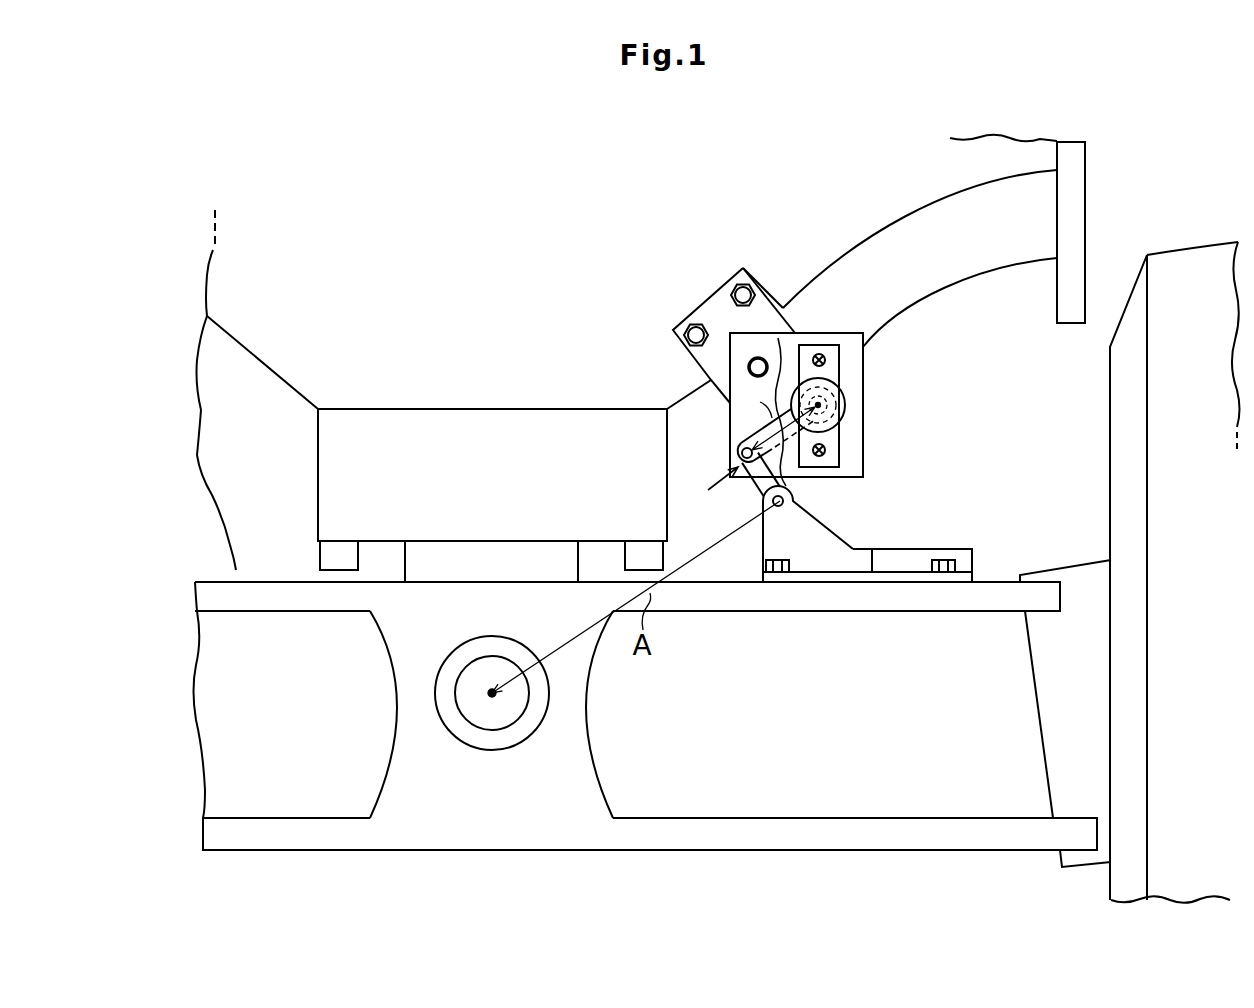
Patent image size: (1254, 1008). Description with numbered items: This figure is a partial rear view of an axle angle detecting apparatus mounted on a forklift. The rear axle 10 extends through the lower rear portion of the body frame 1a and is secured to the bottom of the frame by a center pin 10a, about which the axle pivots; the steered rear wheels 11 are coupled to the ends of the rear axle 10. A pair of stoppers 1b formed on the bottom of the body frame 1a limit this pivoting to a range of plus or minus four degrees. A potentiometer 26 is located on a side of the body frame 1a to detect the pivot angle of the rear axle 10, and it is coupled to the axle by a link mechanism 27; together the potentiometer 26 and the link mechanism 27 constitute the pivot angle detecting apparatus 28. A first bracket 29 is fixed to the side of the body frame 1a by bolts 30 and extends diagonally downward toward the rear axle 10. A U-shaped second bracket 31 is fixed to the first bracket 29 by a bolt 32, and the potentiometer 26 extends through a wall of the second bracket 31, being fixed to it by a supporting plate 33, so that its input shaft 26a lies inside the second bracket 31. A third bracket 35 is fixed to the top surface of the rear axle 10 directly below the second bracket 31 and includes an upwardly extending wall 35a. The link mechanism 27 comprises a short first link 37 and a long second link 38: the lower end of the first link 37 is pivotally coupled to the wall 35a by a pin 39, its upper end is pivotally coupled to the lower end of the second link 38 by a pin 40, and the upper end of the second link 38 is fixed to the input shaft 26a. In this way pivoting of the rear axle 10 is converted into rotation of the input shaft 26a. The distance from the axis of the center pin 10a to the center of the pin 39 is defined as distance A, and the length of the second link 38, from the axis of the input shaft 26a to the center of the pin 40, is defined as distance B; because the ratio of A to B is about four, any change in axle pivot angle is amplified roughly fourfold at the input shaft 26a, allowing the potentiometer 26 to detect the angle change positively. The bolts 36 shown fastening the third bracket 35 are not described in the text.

The body frame 1a is at (948, 285).
The stoppers 1b is at (360, 558).
The rear axle 10 is at (734, 852).
The center pin 10a is at (505, 718).
The rear wheels 11 is at (1186, 243).
The potentiometer 26 is at (846, 405).
The input shaft 26a is at (822, 403).
The link mechanism 27 is at (705, 492).
The pivot angle detecting apparatus 28 is at (923, 426).
The first bracket 29 is at (782, 311).
The bolts 30 is at (696, 327).
The second bracket 31 is at (865, 455).
The bolt 32 is at (765, 362).
The supporting plate 33 is at (840, 358).
The third bracket 35 is at (902, 548).
The wall 35a is at (820, 513).
The bolts 36 is at (944, 559).
The first link 37 is at (752, 486).
The second link 38 is at (741, 438).
The pin 39 is at (786, 498).
The pin 40 is at (736, 453).